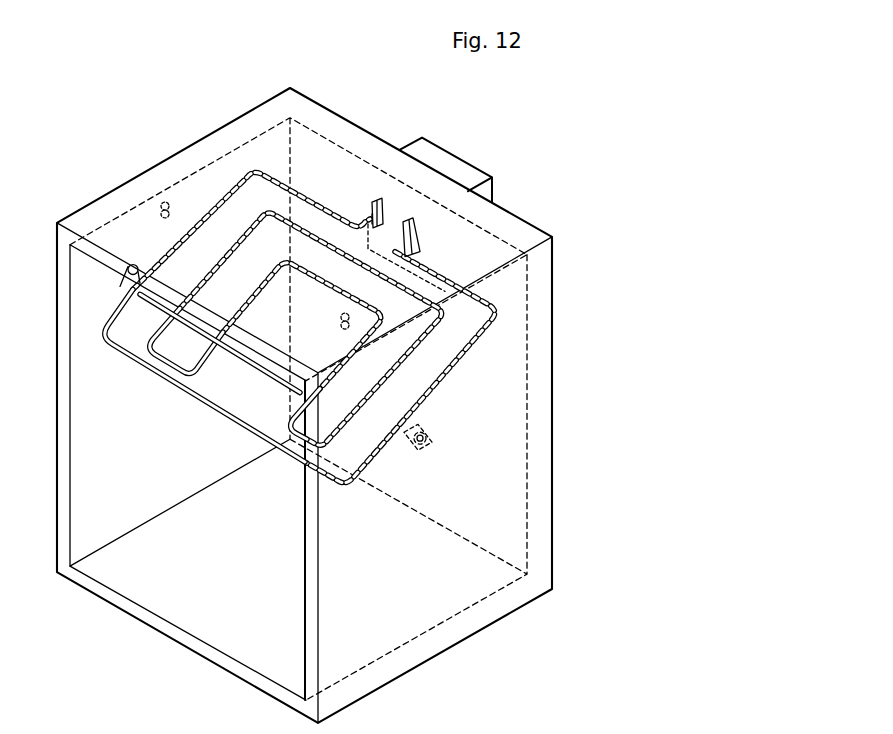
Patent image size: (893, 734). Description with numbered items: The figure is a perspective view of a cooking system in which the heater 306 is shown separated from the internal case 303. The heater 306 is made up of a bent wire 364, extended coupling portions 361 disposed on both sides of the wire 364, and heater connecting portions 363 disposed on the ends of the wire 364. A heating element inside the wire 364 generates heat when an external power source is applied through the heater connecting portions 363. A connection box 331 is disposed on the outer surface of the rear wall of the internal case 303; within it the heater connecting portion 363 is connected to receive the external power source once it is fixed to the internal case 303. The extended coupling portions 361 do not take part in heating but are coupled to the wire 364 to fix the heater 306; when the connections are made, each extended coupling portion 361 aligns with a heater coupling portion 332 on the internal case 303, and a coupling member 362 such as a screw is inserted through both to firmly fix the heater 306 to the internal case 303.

The internal case 303 is at (242, 122).
The connection box 331 is at (438, 157).
The heater coupling portion 332 is at (165, 200).
The heater connecting portion 363 is at (371, 200).
The heater 306 is at (163, 372).
The wire 364 is at (200, 412).
The extended coupling portion 361 is at (432, 425).
The coupling member 362 is at (428, 455).